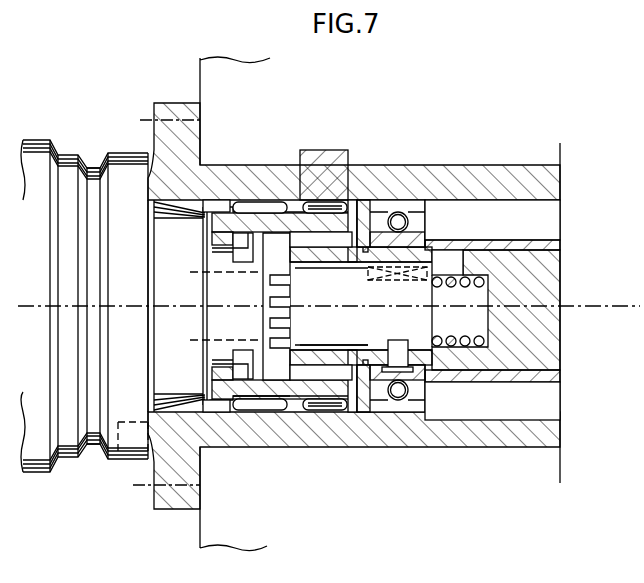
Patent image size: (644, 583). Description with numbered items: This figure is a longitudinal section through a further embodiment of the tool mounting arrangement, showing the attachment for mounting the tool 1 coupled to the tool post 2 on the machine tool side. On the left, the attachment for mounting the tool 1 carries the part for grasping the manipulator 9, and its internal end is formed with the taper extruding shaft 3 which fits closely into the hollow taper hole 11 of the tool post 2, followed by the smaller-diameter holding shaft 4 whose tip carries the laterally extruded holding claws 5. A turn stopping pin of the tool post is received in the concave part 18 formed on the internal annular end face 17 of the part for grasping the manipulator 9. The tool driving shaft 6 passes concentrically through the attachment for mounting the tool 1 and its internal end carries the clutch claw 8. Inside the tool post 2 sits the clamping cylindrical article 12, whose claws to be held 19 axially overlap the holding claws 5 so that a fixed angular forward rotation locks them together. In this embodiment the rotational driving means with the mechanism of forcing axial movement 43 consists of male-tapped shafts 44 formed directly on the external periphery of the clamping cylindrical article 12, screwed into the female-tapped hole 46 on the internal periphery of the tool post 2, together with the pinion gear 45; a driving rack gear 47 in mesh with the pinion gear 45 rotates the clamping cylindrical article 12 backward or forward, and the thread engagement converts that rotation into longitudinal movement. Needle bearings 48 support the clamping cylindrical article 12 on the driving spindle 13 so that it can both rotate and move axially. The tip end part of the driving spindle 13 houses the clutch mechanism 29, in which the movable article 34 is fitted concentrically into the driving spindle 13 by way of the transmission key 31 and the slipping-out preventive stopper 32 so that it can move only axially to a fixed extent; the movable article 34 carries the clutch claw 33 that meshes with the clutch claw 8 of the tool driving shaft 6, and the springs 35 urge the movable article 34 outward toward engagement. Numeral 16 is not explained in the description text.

The attachment for mounting the tool 1 is at (35, 160).
The tool post 2 is at (460, 440).
The taper extruding shaft 3 is at (165, 326).
The holding shaft 4 is at (227, 288).
The holding claw 5 is at (233, 252).
The tool driving shaft 6 is at (248, 282).
The clutch claw 8 is at (268, 318).
The part for grasping the manipulator 9 is at (90, 185).
The hollow taper hole 11 is at (157, 382).
The clamping cylindrical article 12 is at (287, 392).
The driving spindle 13 is at (527, 328).
The housing face 16 is at (145, 168).
The internal annular end face 17 is at (150, 188).
The concave part 18 is at (133, 445).
The claw to be held 19 is at (257, 412).
The clutch mechanism 29 is at (378, 413).
The transmission key 31 is at (407, 277).
The slipping-out preventive stopper 32 is at (422, 358).
The clutch claw 33 is at (285, 300).
The movable article 34 is at (420, 290).
The spring 35 is at (478, 273).
The rotational driving means with mechanism of forcing axial movement 43 is at (315, 410).
The male-tapped shaft 44 is at (220, 402).
The pinion gear 45 is at (355, 340).
The female-tapped hole 46 is at (238, 203).
The driving rack gear 47 is at (333, 158).
The needle bearing 48 is at (360, 240).